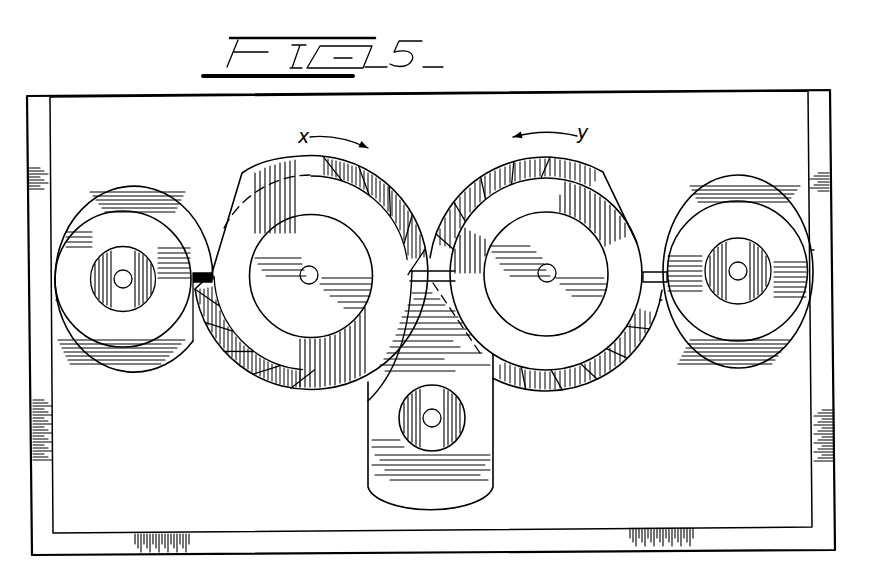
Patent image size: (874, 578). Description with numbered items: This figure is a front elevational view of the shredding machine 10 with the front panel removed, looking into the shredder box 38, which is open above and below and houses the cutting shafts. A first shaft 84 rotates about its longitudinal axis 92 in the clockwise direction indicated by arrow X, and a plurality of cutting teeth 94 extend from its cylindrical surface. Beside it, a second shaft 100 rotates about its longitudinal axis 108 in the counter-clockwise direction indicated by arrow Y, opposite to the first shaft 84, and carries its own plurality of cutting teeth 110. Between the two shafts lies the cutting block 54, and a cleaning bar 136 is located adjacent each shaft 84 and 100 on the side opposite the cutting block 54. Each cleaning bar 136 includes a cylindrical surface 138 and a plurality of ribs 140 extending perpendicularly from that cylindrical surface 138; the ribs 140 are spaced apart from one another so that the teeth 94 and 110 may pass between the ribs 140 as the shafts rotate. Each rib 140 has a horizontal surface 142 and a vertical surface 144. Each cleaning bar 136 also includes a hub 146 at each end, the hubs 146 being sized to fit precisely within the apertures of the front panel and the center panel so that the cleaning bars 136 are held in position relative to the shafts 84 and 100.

The apparatus 10 is at (567, 77).
The shredder box 38 is at (453, 113).
The cutting block 54 is at (505, 469).
The first shaft 84 is at (275, 393).
The longitudinal axis 92 is at (311, 270).
The cutting teeth 94 is at (374, 168).
The second shaft 100 is at (561, 406).
The longitudinal axis 108 is at (545, 283).
The cutting teeth 110 is at (511, 154).
The cleaning bar 136 is at (121, 381).
The cylindrical surface 138 is at (97, 205).
The ribs 140 is at (156, 192).
The horizontal surface 142 is at (649, 262).
The vertical surface 144 is at (663, 318).
The hub 146 is at (140, 250).